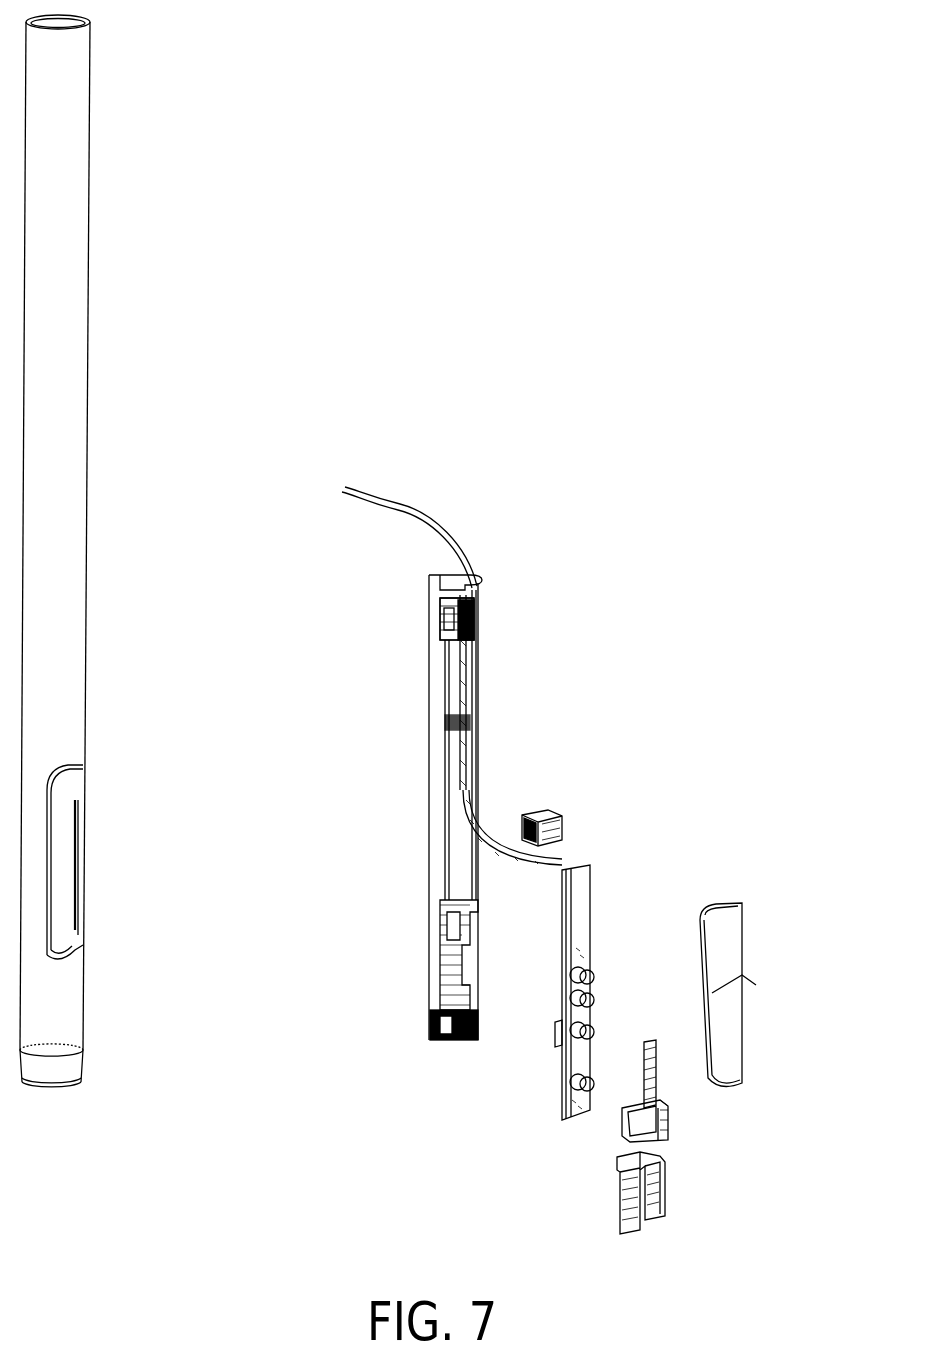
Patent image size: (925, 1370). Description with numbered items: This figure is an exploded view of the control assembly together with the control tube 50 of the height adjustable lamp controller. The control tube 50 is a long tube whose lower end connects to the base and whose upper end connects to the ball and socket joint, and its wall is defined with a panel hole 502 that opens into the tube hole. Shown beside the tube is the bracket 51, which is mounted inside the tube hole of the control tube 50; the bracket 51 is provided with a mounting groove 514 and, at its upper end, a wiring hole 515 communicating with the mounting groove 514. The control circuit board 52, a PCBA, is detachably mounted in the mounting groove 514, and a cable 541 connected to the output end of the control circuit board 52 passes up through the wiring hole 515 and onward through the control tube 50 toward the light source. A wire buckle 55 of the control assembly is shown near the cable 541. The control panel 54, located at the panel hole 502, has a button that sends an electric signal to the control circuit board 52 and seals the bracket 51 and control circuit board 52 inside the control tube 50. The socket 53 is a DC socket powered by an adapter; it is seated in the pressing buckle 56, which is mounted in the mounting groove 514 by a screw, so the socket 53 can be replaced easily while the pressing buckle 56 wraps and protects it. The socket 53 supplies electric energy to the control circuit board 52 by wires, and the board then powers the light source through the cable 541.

The control tube 50 is at (90, 250).
The panel hole 502 is at (62, 860).
The bracket 51 is at (440, 693).
The mounting groove 514 is at (440, 778).
The wiring hole 515 is at (450, 572).
The cable 541 is at (450, 535).
The wire buckle 55 is at (563, 807).
The control circuit board 52 is at (583, 862).
The control panel 54 is at (712, 993).
The socket 53 is at (667, 1123).
The pressing buckle 56 is at (660, 1213).